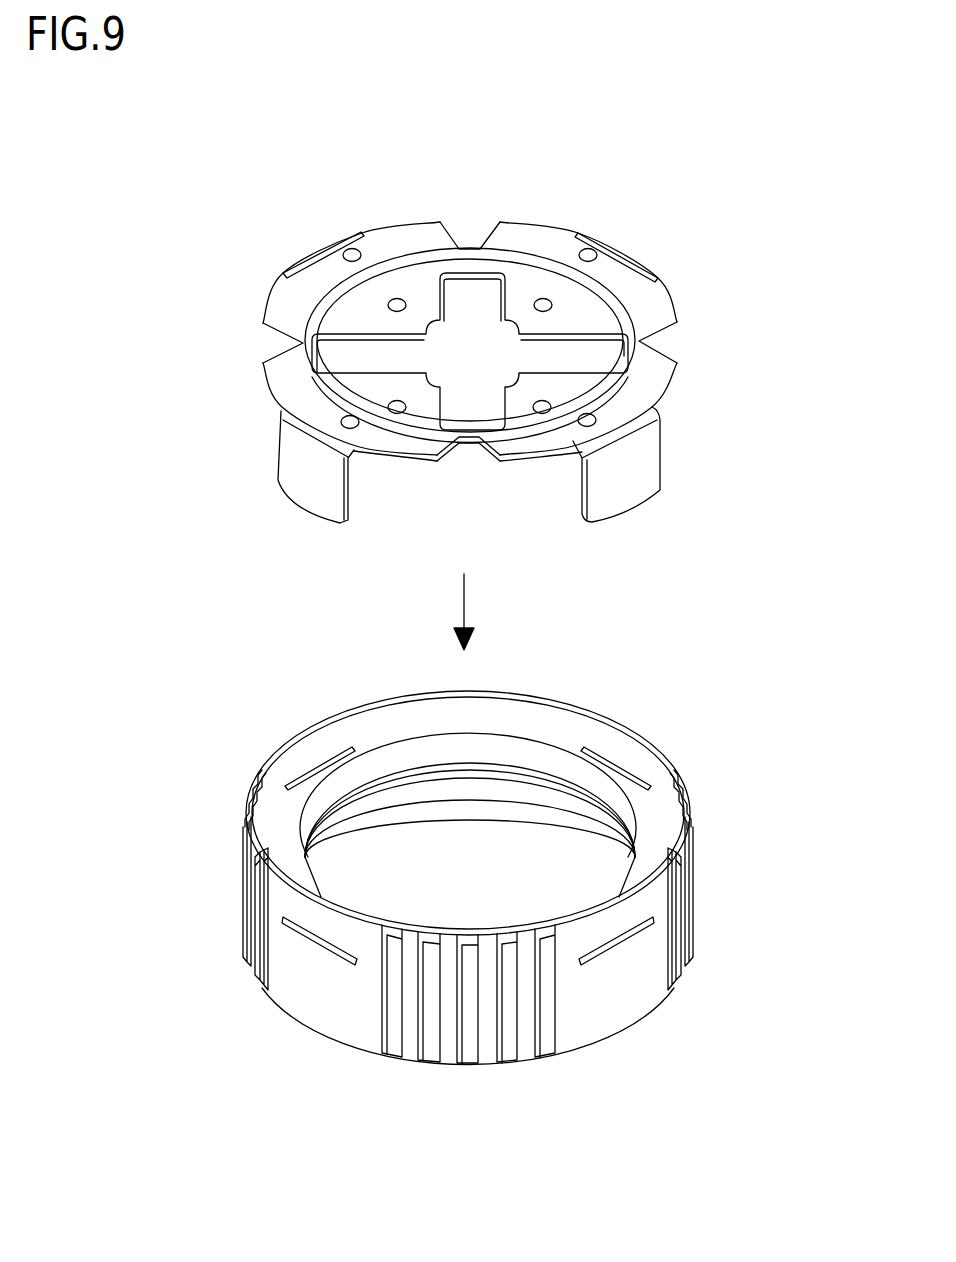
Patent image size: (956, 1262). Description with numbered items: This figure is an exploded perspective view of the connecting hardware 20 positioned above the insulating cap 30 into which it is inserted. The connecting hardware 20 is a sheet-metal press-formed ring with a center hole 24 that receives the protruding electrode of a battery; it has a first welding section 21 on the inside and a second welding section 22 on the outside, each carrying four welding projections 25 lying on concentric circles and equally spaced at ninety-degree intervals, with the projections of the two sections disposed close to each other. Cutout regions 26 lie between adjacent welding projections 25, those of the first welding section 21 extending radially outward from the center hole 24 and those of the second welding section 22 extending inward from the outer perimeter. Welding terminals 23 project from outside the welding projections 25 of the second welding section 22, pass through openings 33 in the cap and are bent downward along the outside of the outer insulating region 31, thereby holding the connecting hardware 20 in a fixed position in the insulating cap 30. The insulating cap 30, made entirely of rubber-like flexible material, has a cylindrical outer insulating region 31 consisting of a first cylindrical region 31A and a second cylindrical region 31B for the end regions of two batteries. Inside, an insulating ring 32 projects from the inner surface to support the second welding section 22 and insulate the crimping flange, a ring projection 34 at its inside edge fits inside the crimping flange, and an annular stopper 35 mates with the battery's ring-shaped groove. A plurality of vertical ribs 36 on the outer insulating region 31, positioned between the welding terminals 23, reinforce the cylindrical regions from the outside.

The connecting hardware 20 is at (682, 222).
The first welding section 21 is at (517, 287).
The second welding section 22 is at (537, 238).
The welding terminal 23 is at (283, 273).
The center hole 24 is at (445, 316).
The welding projection 25 is at (588, 256).
The cutout region 26 is at (263, 338).
The insulating cap 30 is at (726, 812).
The outer insulating region 31 is at (760, 630).
The first cylindrical region 31A is at (530, 817).
The second cylindrical region 31B is at (523, 710).
The insulating ring 32 is at (400, 757).
The opening 33 is at (304, 769).
The ring projection 34 is at (409, 779).
The annular stopper 35 is at (460, 801).
The vertical rib 36 is at (250, 891).